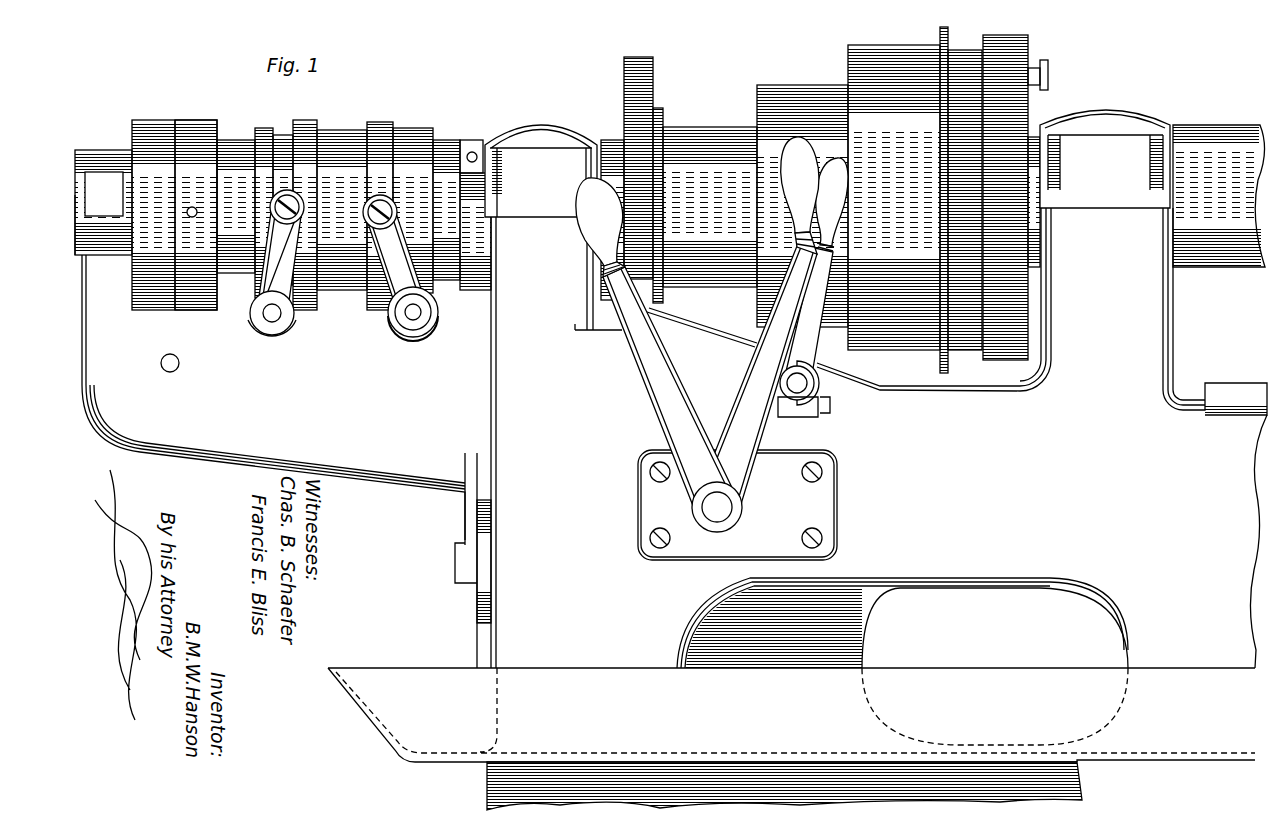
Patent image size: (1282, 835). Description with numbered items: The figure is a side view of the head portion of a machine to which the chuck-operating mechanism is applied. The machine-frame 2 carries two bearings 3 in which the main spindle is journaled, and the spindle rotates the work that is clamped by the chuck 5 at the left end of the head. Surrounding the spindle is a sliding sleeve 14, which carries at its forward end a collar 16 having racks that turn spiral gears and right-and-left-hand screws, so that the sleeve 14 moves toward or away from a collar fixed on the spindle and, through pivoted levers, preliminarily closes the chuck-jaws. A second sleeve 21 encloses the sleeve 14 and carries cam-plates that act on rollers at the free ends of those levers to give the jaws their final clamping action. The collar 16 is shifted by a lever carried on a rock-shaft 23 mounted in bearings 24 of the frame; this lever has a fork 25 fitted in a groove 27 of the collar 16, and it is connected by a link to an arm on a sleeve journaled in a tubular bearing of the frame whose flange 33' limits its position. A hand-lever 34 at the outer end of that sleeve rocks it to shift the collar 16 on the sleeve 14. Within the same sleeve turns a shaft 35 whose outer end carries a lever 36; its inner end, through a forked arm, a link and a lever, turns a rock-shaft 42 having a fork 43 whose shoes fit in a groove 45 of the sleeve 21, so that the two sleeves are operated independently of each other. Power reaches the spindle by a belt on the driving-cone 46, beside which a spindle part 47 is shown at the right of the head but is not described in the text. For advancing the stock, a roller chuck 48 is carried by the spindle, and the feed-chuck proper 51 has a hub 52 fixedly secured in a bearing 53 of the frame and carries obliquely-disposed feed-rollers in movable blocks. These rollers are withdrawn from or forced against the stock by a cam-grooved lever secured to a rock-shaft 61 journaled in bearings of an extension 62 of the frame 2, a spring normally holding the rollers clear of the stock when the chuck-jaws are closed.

The machine-frame 2 is at (940, 530).
The bearings 3 is at (532, 128).
The chuck 5 is at (1219, 196).
The sleeve 14 is at (222, 199).
The collar 16 is at (413, 140).
The sleeve 21 is at (262, 126).
The rock-shaft 23 is at (412, 312).
The bearings 24 is at (425, 326).
The fork 25 is at (386, 291).
The groove 27 is at (378, 122).
The flange 33' is at (765, 505).
The hand-lever 34 is at (762, 364).
The shaft 35 is at (733, 508).
The lever 36 is at (655, 388).
The rock-shaft 42 is at (268, 313).
The fork 43 is at (275, 236).
The groove 45 is at (292, 123).
The driving-cone 46 is at (795, 90).
The gear and bearing 47 is at (960, 380).
The chuck 48 is at (205, 121).
The feed-chuck 51 is at (158, 121).
The hub 52 is at (84, 228).
The bearing 53 is at (113, 150).
The rock-shaft 61 is at (178, 357).
The extension 62 is at (286, 461).